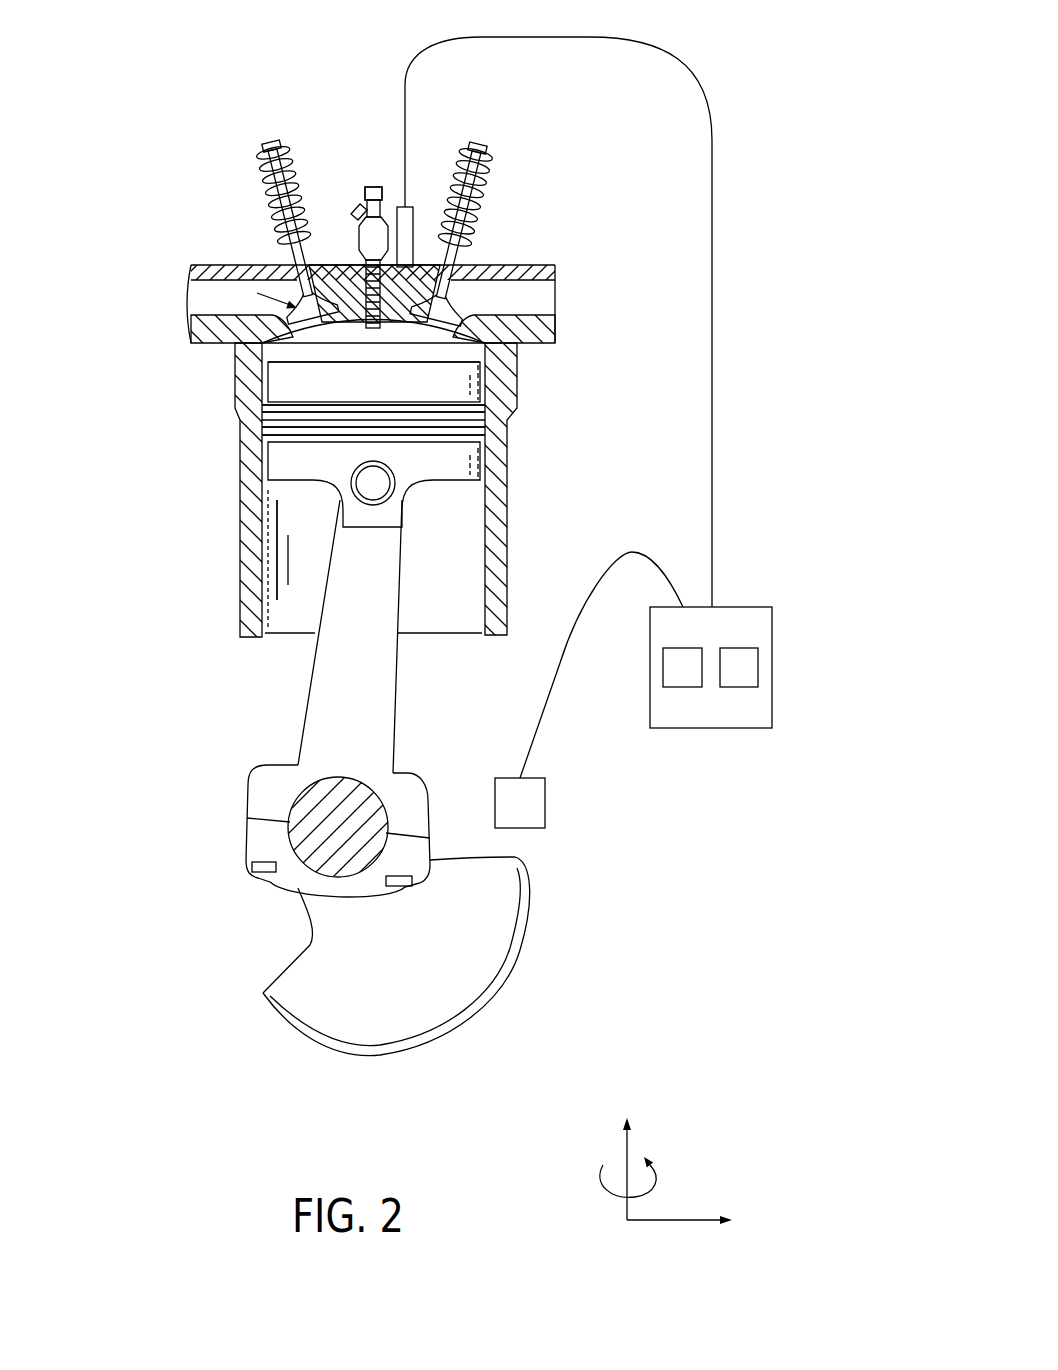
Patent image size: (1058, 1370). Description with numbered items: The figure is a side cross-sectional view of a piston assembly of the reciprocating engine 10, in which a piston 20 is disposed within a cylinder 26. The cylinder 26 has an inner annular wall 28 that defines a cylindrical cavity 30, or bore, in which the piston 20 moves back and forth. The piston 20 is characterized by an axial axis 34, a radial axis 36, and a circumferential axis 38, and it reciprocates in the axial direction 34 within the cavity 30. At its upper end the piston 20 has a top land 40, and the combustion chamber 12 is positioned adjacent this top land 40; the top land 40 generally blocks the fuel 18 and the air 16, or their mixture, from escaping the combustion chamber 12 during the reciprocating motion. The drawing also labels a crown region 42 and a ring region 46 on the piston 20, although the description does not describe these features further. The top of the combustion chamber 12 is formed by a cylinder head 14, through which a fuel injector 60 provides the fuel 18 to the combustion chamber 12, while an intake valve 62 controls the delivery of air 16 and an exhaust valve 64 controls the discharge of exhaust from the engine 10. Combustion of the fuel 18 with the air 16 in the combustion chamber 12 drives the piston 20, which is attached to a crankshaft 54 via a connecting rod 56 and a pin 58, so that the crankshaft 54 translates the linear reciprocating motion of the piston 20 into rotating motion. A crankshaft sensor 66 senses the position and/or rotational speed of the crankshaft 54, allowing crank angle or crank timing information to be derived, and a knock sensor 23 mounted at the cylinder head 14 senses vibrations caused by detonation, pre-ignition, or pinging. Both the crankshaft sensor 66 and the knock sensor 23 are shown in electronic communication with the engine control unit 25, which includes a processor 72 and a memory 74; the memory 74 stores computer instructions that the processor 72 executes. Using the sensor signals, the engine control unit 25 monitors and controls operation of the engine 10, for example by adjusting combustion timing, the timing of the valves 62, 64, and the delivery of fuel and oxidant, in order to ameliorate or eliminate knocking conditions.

The engine 10 is at (606, 164).
The combustion chamber 12 is at (415, 331).
The cylinder head 14 is at (337, 333).
The air 16 is at (278, 282).
The fuel 18 is at (373, 178).
The piston 20 is at (503, 495).
The knock sensor 23 is at (418, 213).
The engine control unit 25 is at (742, 607).
The cylinder 26 is at (242, 514).
The inner annular wall 28 is at (264, 556).
The cylindrical cavity 30 is at (312, 625).
The axial axis 34 is at (623, 1153).
The radial axis 36 is at (673, 1221).
The circumferential axis 38 is at (663, 1188).
The top land 40 is at (453, 473).
The piston crown 42 is at (246, 396).
The piston ring 46 is at (435, 390).
The crankshaft 54 is at (308, 980).
The connecting rod 56 is at (377, 742).
The pin 58 is at (373, 493).
The fuel injector 60 is at (377, 203).
The intake valve 62 is at (270, 146).
The exhaust valve 64 is at (479, 146).
The crankshaft sensor 66 is at (547, 805).
The processor 72 is at (687, 687).
The memory 74 is at (742, 687).